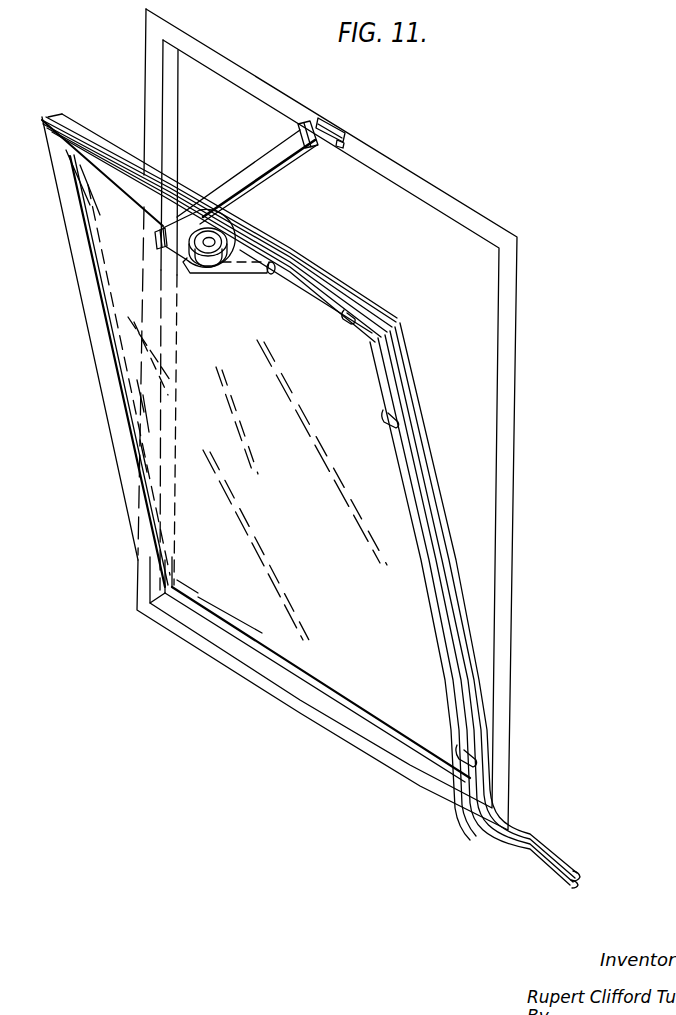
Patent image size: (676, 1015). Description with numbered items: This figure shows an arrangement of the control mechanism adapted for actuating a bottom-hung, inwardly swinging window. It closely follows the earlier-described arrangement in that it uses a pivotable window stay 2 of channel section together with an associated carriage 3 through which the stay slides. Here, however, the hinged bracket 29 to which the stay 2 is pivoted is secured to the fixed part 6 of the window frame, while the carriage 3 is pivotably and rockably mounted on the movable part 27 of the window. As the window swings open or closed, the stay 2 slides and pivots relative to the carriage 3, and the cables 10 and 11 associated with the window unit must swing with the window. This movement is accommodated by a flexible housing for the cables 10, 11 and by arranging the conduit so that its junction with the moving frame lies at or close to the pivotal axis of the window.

The window stay 2 is at (243, 178).
The carriage 3 is at (188, 268).
The fixed part of the window frame 6 is at (388, 167).
The cable 10 is at (579, 877).
The cable 11 is at (576, 887).
The movable part of the window 27 is at (175, 213).
The hinged bracket 29 is at (327, 125).